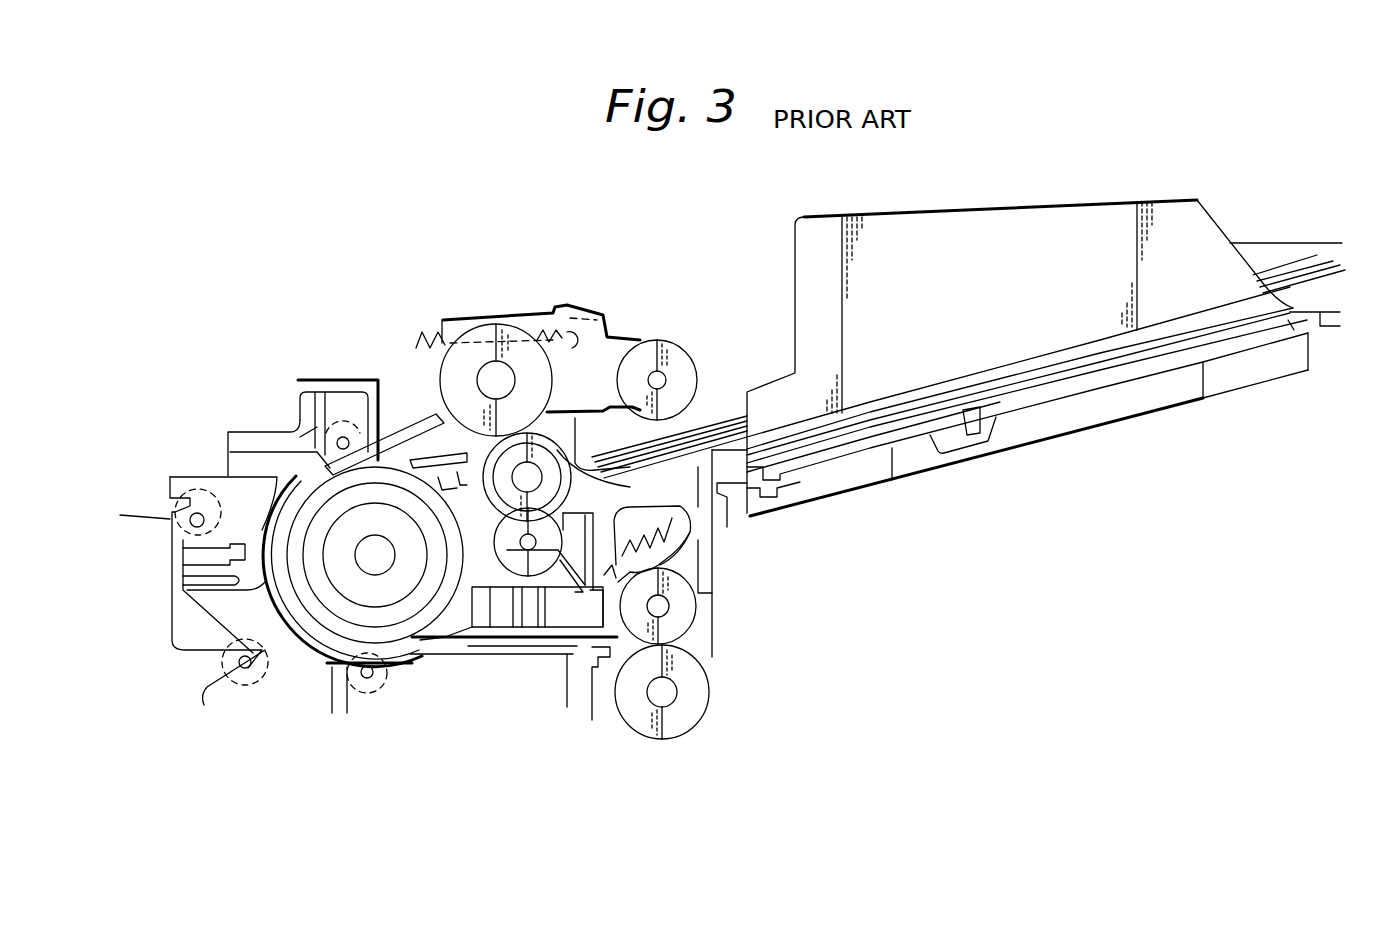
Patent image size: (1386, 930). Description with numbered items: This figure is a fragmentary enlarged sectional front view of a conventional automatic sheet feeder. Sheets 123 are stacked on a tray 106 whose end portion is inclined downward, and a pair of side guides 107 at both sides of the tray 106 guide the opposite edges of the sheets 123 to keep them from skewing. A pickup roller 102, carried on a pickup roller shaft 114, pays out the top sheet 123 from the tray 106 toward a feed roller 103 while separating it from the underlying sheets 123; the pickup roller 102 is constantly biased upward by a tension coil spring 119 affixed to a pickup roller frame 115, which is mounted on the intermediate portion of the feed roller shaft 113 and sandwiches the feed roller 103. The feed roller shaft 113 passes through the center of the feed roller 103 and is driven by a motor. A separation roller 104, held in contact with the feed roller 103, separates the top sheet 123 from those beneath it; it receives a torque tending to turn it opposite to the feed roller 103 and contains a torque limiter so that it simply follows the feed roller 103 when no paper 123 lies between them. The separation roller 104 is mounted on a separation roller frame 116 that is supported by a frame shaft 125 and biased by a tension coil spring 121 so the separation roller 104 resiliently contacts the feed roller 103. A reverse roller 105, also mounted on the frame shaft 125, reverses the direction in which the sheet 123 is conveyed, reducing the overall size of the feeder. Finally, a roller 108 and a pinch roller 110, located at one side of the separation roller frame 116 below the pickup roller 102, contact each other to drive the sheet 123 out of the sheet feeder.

The pickup roller 102 is at (655, 340).
The feed roller 103 is at (420, 362).
The separation roller 104 is at (500, 520).
The reverse roller 105 is at (228, 476).
The tray 106 is at (1127, 353).
The side guide 107 is at (1000, 210).
The roller 108 is at (707, 704).
The pinch roller 110 is at (697, 630).
The feed roller shaft 113 is at (488, 348).
The pickup roller shaft 114 is at (660, 378).
The pickup roller frame 115 is at (607, 347).
The separation roller frame 116 is at (577, 575).
The tension coil spring 119 is at (427, 346).
The tension coil spring 121 is at (690, 556).
The sheet 123 is at (1277, 264).
The frame shaft 125 is at (360, 573).